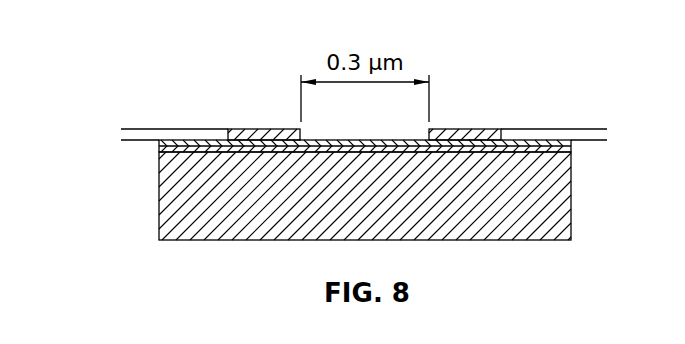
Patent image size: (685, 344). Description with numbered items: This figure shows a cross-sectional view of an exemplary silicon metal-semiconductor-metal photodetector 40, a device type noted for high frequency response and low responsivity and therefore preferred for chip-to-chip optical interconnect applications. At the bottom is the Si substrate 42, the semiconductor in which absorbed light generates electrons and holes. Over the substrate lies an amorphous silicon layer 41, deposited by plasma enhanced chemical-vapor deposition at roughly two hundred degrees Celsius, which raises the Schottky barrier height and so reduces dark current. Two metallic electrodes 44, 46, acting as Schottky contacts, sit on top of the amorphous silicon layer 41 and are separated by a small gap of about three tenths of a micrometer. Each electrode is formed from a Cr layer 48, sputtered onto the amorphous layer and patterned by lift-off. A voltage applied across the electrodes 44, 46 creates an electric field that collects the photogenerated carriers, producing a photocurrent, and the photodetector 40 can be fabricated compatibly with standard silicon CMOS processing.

The metal-semiconductor-metal photodetector 40 is at (138, 46).
The amorphous silicon layer 41 is at (159, 148).
The Si substrate 42 is at (159, 203).
The metallic electrode 44 is at (462, 129).
The metallic electrode 46 is at (255, 129).
The Cr layer 48 is at (362, 135).